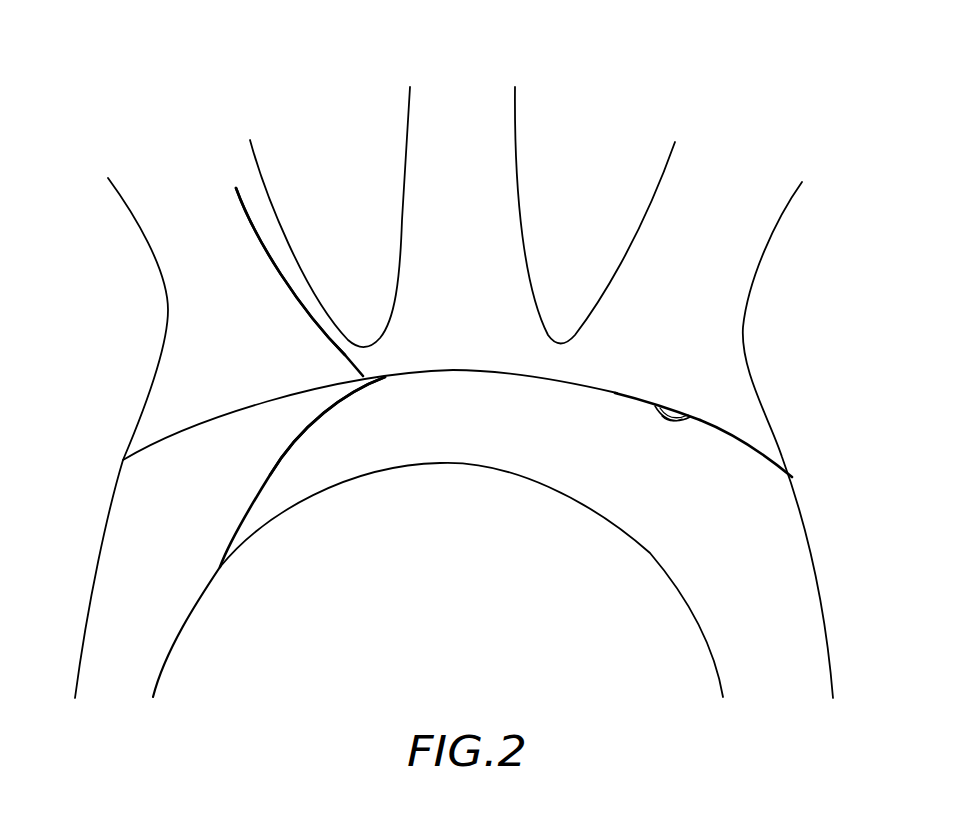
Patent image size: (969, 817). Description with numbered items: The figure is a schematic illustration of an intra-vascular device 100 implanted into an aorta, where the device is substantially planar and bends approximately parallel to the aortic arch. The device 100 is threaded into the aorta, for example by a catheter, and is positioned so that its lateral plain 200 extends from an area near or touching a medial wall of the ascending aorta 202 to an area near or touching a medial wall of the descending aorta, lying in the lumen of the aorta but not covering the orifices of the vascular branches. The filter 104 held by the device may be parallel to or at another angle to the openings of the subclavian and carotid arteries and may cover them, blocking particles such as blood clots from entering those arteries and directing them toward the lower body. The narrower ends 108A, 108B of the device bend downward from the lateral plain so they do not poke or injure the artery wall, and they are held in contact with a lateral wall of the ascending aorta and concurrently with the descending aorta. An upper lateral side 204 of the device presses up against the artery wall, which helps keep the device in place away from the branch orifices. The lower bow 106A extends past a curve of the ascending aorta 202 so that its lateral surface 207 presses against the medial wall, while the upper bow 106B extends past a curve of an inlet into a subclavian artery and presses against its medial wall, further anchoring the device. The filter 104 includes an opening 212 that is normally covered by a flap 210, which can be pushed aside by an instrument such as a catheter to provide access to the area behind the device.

The intra-vascular device 100 is at (745, 440).
The filter 104 is at (527, 377).
The lower bow 106A is at (320, 415).
The upper bow 106B is at (302, 308).
The end 108A is at (122, 552).
The end 108B is at (778, 462).
The lateral plain 200 is at (617, 390).
The ascending aorta 202 is at (207, 588).
The upper lateral side 204 is at (123, 460).
The lateral surface 207 is at (260, 238).
The flap 210 is at (672, 408).
The opening 212 is at (668, 422).